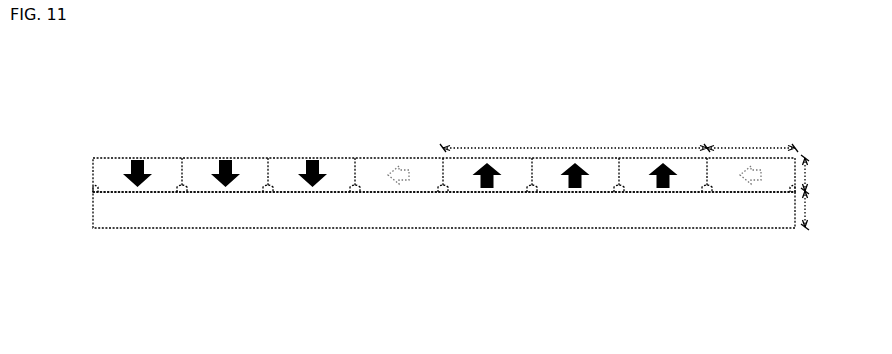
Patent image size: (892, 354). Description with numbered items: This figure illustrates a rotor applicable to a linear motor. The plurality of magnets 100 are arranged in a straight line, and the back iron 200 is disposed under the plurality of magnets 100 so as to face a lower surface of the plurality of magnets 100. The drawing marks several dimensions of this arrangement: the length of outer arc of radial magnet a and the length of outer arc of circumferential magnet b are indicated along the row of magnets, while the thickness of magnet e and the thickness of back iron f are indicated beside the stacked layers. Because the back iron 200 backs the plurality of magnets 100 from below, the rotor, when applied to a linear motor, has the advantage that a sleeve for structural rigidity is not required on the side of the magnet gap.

The plurality of magnets 100 is at (413, 158).
The back iron 200 is at (359, 202).
The length of outer arc of radial magnet a is at (575, 141).
The length of outer arc of circumferential magnet b is at (752, 141).
The thickness of magnet e is at (814, 174).
The thickness of back iron f is at (813, 210).